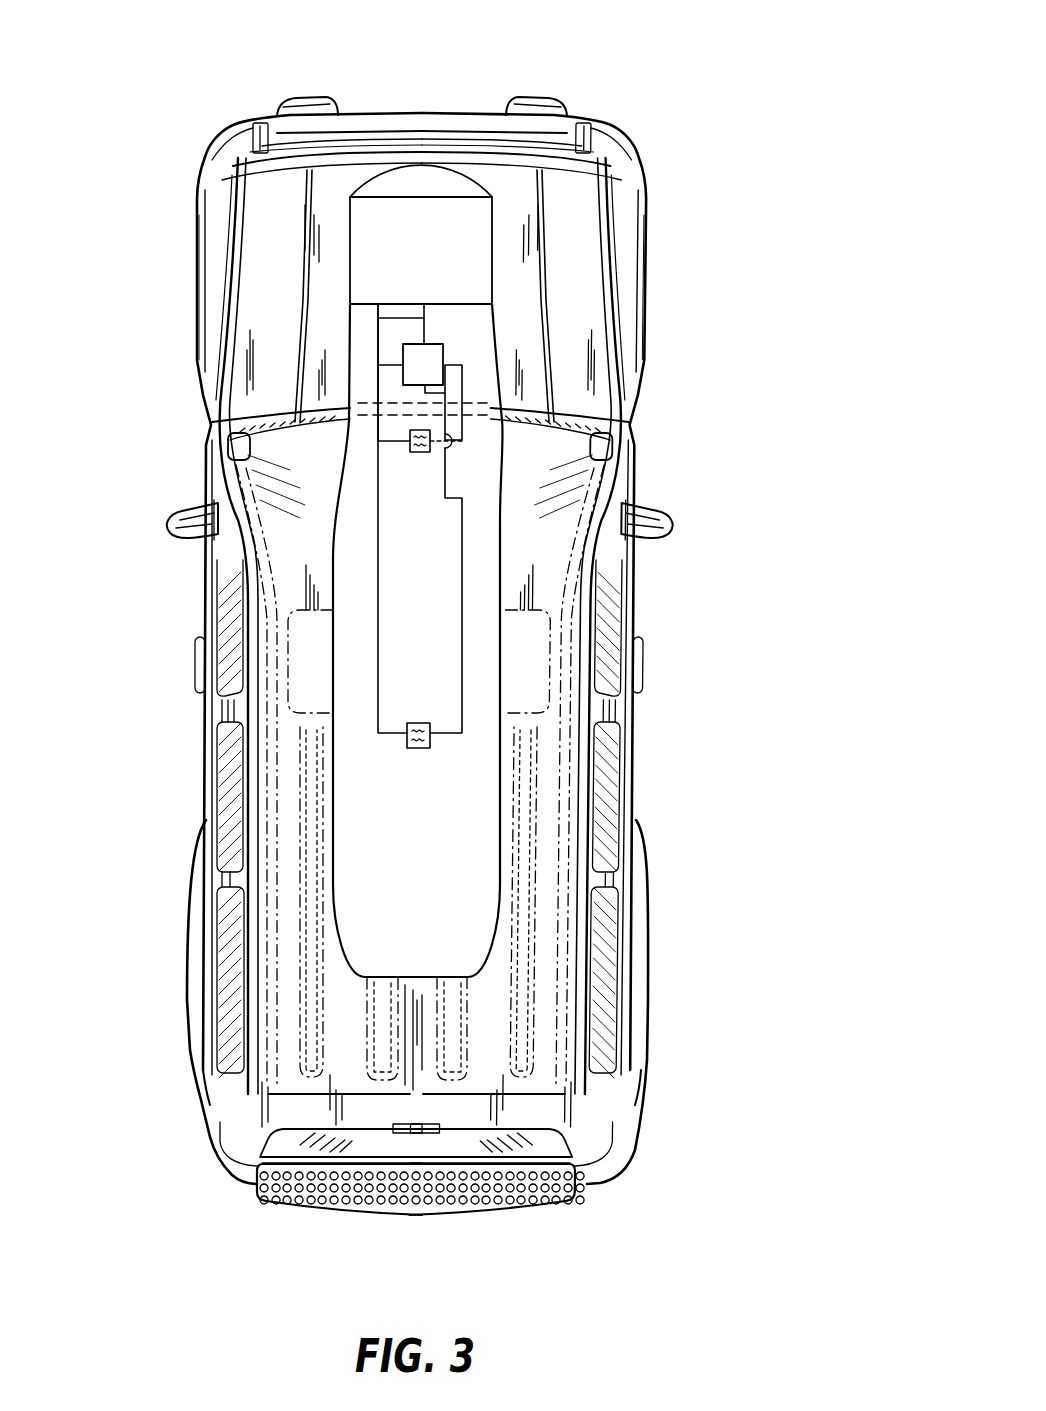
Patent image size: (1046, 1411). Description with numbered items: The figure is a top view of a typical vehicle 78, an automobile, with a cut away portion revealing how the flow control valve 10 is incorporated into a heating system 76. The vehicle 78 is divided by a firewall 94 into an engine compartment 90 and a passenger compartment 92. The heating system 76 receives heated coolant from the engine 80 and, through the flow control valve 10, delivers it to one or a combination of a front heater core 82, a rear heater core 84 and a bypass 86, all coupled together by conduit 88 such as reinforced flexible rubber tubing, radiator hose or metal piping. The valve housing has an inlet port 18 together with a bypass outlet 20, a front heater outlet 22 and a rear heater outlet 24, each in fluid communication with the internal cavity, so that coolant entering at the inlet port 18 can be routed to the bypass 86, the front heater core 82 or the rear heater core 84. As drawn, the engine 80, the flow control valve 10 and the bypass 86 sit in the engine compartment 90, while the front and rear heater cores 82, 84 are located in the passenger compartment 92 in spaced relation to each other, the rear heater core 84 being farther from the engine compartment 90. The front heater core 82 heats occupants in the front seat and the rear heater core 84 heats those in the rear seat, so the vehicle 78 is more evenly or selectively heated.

The flow control valve 10 is at (440, 338).
The inlet port 18 is at (424, 321).
The bypass outlet 20 is at (386, 367).
The front heater outlet 22 is at (455, 363).
The rear heater outlet 24 is at (414, 396).
The heating system 76 is at (526, 338).
The vehicle 78 is at (723, 127).
The engine 80 is at (440, 195).
The front heater core 82 is at (420, 453).
The rear heater core 84 is at (421, 722).
The bypass 86 is at (379, 350).
The conduit 88 is at (462, 500).
The engine compartment 90 is at (407, 183).
The passenger compartment 92 is at (448, 864).
The firewall 94 is at (370, 406).